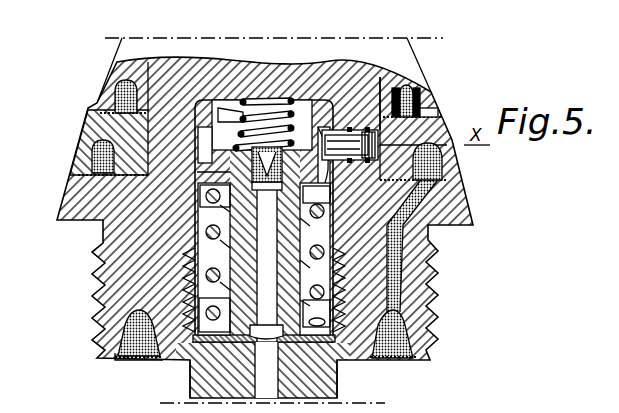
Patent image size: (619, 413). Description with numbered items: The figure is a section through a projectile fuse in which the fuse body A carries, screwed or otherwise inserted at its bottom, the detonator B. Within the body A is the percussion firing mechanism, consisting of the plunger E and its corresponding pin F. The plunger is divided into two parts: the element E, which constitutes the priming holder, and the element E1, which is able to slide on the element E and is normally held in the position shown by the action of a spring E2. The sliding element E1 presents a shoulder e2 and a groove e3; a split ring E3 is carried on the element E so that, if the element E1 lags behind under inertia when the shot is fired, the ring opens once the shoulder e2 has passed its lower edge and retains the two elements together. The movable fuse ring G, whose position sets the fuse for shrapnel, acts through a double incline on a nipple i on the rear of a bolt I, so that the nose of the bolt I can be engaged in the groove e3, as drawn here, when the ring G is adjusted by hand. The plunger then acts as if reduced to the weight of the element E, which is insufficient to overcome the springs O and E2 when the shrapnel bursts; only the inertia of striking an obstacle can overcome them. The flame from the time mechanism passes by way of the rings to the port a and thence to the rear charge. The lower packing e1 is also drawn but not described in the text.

The fuse body A is at (100, 305).
The detonator B is at (215, 382).
The movable fuse ring G is at (107, 128).
The nipple i is at (425, 110).
The packing e1 is at (338, 372).
The port a is at (103, 348).
The plunger E is at (200, 342).
The sliding plunger element E1 is at (197, 167).
The spring E2 is at (210, 273).
The split ring E3 is at (225, 178).
The pin F is at (265, 118).
The shoulder e2 is at (225, 110).
The spring O is at (252, 120).
The groove e3 is at (353, 132).
The bolt I is at (364, 98).